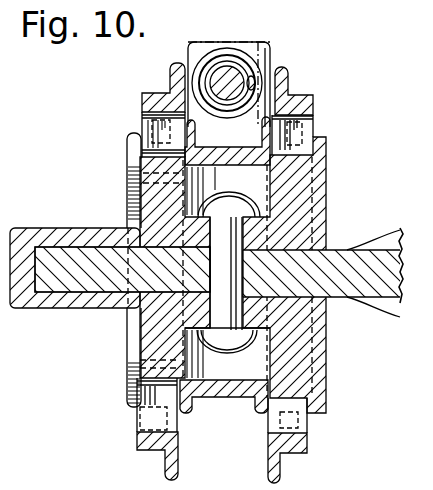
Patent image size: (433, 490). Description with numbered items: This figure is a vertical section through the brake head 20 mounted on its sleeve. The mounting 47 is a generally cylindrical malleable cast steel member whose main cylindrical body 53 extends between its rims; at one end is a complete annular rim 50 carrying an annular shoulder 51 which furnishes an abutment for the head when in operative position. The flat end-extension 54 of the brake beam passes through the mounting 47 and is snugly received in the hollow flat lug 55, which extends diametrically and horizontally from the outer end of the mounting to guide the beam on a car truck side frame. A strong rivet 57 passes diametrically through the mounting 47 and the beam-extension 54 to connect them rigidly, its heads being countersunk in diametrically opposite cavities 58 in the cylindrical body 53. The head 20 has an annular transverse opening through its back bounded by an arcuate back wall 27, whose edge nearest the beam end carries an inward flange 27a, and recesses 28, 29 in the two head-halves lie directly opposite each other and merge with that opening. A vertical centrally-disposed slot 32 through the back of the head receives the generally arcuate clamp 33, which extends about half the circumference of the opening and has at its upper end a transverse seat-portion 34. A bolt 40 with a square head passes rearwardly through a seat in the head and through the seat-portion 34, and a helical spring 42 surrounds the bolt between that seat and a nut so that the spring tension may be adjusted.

The brake head 20 is at (137, 98).
The recess 28 is at (145, 118).
The arcuate back wall 27 is at (133, 162).
The inward flange 27a is at (132, 182).
The flat lug 55 is at (68, 230).
The end-extension 54 is at (88, 278).
The main cylindrical body 53 is at (163, 320).
The recess 29 is at (150, 418).
The bolt 40 is at (225, 73).
The helical spring 42 is at (250, 52).
The transverse seat-portion 34 is at (272, 48).
The clamp 33 is at (238, 132).
The rivet 57 is at (243, 186).
The annular rim 50 is at (293, 148).
The annular shoulder 51 is at (328, 137).
The cavities 58 is at (264, 183).
The mounting 47 is at (284, 228).
The slot 32 is at (232, 447).